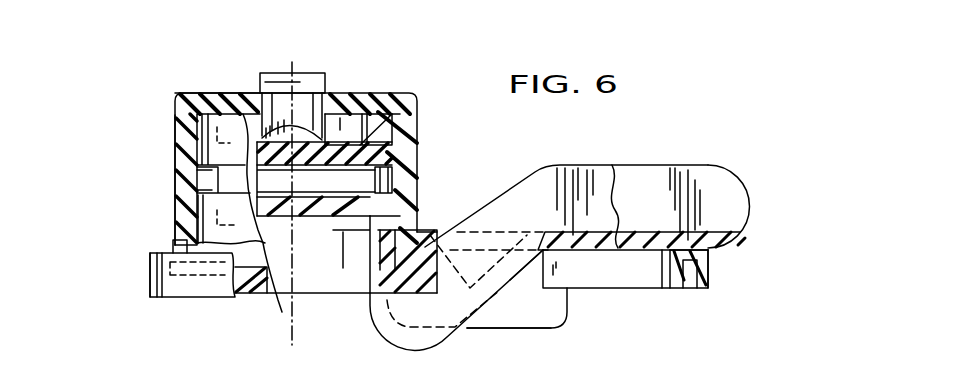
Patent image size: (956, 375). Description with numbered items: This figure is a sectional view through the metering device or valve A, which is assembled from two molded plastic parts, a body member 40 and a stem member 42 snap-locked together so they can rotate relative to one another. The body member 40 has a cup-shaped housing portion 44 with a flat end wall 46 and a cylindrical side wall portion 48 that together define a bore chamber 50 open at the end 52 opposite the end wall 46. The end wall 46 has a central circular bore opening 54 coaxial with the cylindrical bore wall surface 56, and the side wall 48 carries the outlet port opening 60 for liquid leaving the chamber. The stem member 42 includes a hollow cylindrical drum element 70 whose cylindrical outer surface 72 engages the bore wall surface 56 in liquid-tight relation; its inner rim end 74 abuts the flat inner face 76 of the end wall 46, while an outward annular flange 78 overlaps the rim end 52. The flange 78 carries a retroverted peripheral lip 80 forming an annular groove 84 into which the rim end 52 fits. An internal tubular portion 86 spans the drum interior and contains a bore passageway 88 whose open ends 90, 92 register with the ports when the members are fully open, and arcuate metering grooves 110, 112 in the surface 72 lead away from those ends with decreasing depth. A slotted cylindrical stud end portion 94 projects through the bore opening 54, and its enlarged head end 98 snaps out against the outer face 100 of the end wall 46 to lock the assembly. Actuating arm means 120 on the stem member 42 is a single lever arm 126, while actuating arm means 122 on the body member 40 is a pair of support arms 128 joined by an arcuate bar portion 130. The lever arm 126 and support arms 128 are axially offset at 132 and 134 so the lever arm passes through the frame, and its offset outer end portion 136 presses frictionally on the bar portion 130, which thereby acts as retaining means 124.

The metering device or valve A is at (170, 86).
The body member 40 is at (172, 108).
The stem member 42 is at (368, 277).
The cup-shaped housing portion 44 is at (172, 143).
The flat end wall 46 is at (218, 98).
The cylindrical side wall portion 48 is at (180, 125).
The bore chamber 50 is at (416, 140).
The open end 52 is at (420, 277).
The circular bore opening 54 is at (308, 98).
The cylindrical bore wall surface 56 is at (404, 203).
The outlet port opening 60 is at (334, 245).
The cylindrical drum element 70 is at (405, 240).
The cylindrical outer surface 72 is at (176, 240).
The inner rim end 74 is at (380, 95).
The flat inner face 76 is at (356, 122).
The outward annular flange 78 is at (185, 297).
The retroverted peripheral lip 80 is at (160, 253).
The annular groove 84 is at (382, 258).
The internal tubular portion 86 is at (280, 285).
The bore passageway 88 is at (313, 221).
The open end of bore passageway 90 is at (200, 172).
The open end of bore passageway 92 is at (414, 172).
The slotted cylindrical stud end portion 94 is at (253, 103).
The head end 98 is at (280, 80).
The outer face of end wall 100 is at (190, 97).
The arcuate metering groove 110 is at (199, 190).
The arcuate metering groove 112 is at (418, 162).
The actuating arm means 120 is at (692, 156).
The actuating arm means 122 is at (577, 324).
The retaining means 124 is at (726, 259).
The lever arm 126 is at (539, 174).
The support arms 128 is at (492, 318).
The arcuate bar portion 130 is at (710, 270).
The axial offset of lever arm 132 is at (507, 270).
The axial offset of support arms 134 is at (460, 236).
The offset outer end portion 136 is at (724, 192).